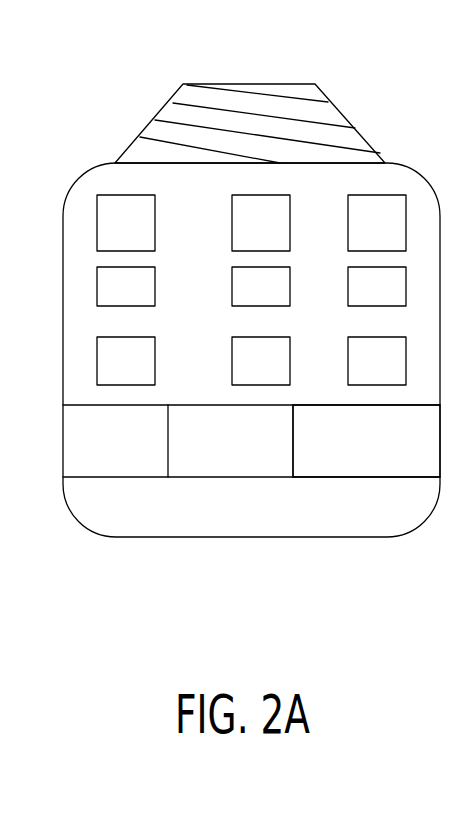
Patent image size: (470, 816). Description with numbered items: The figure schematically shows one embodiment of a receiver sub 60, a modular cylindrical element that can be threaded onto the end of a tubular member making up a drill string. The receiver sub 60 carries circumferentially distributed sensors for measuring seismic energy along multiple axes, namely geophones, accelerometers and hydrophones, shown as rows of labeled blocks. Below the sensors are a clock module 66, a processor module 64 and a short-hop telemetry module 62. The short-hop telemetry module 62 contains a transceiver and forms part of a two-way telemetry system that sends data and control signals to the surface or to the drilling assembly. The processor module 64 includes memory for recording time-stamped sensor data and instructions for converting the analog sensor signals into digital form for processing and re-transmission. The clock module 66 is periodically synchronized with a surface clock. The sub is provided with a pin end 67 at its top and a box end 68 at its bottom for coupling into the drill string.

The receiver sub 60 is at (251, 328).
The short-hop telemetry module 62 is at (335, 478).
The processor module 64 is at (215, 478).
The clock module 66 is at (90, 478).
The pin end 67 is at (333, 102).
The box end 68 is at (333, 537).